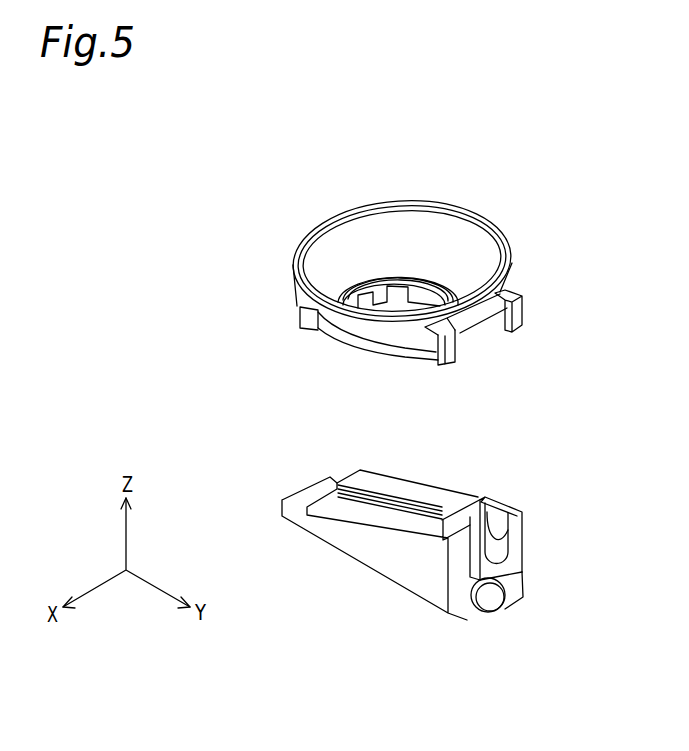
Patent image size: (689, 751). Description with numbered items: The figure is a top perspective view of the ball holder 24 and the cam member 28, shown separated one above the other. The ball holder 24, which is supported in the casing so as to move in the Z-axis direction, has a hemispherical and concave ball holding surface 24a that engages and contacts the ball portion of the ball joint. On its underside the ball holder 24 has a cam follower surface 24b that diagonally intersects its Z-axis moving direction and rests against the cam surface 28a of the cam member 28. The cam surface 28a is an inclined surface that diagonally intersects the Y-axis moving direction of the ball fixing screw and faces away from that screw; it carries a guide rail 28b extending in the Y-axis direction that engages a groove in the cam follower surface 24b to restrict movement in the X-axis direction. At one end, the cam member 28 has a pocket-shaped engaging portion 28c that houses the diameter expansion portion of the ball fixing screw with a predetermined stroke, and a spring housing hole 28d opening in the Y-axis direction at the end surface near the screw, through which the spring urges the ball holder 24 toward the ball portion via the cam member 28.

The ball holder 24 is at (295, 249).
The ball holding surface 24a is at (461, 235).
The cam follower surface 24b is at (415, 363).
The cam member 28 is at (302, 485).
The cam surface 28a is at (447, 495).
The guide rail 28b is at (353, 484).
The engaging portion 28c is at (499, 498).
The spring housing hole 28d is at (490, 597).